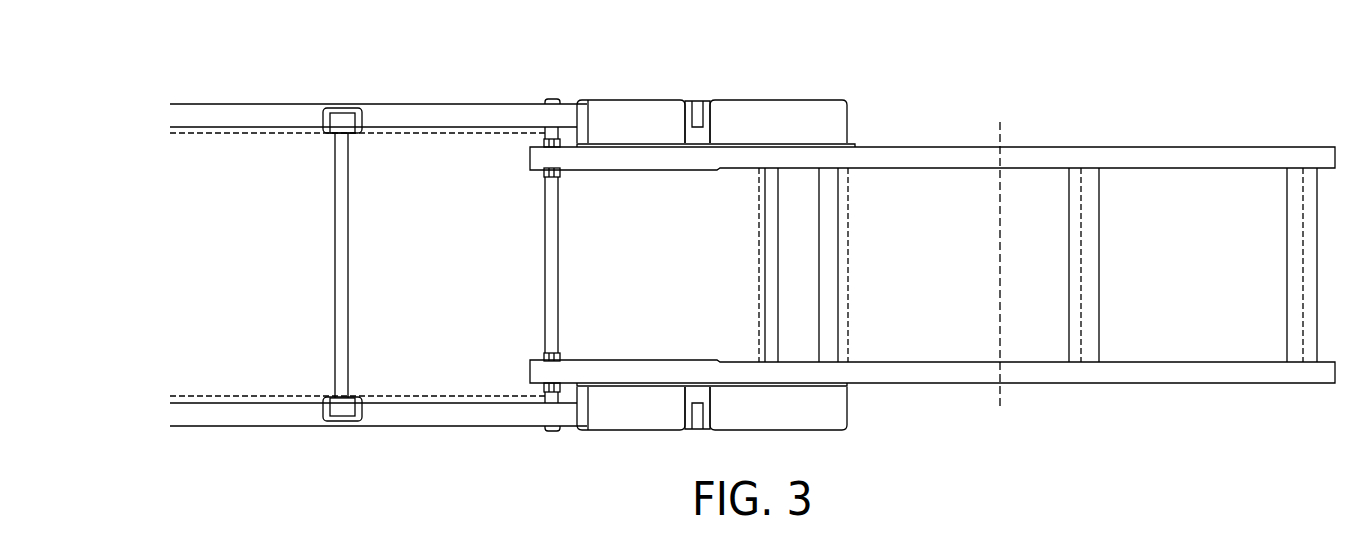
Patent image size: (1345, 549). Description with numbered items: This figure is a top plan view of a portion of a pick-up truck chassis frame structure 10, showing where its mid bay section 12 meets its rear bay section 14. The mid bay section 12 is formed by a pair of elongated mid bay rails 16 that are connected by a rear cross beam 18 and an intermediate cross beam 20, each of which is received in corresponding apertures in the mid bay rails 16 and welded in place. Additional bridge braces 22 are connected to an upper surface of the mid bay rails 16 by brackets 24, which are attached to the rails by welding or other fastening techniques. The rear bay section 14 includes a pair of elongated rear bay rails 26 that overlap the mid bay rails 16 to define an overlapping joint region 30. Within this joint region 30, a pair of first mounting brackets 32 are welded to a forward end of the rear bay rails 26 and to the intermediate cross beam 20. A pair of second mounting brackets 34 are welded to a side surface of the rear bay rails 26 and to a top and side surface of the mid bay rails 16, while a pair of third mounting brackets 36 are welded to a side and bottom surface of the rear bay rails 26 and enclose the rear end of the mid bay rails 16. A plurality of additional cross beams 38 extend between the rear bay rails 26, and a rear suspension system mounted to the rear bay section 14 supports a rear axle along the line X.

The pick-up truck chassis frame structure 10 is at (936, 82).
The mid bay section 12 is at (425, 82).
The rear bay section 14 is at (1029, 122).
The mid bay rails 16 is at (275, 114).
The rear cross beam 18 is at (772, 263).
The intermediate cross beam 20 is at (552, 277).
The bridge braces 22 is at (345, 263).
The brackets 24 is at (343, 108).
The rear bay rails 26 is at (1140, 160).
The overlapping joint region 30 is at (847, 75).
The first mounting brackets 32 is at (536, 184).
The second mounting brackets 34 is at (623, 120).
The third mounting brackets 36 is at (824, 120).
The additional cross beams 38 is at (828, 303).